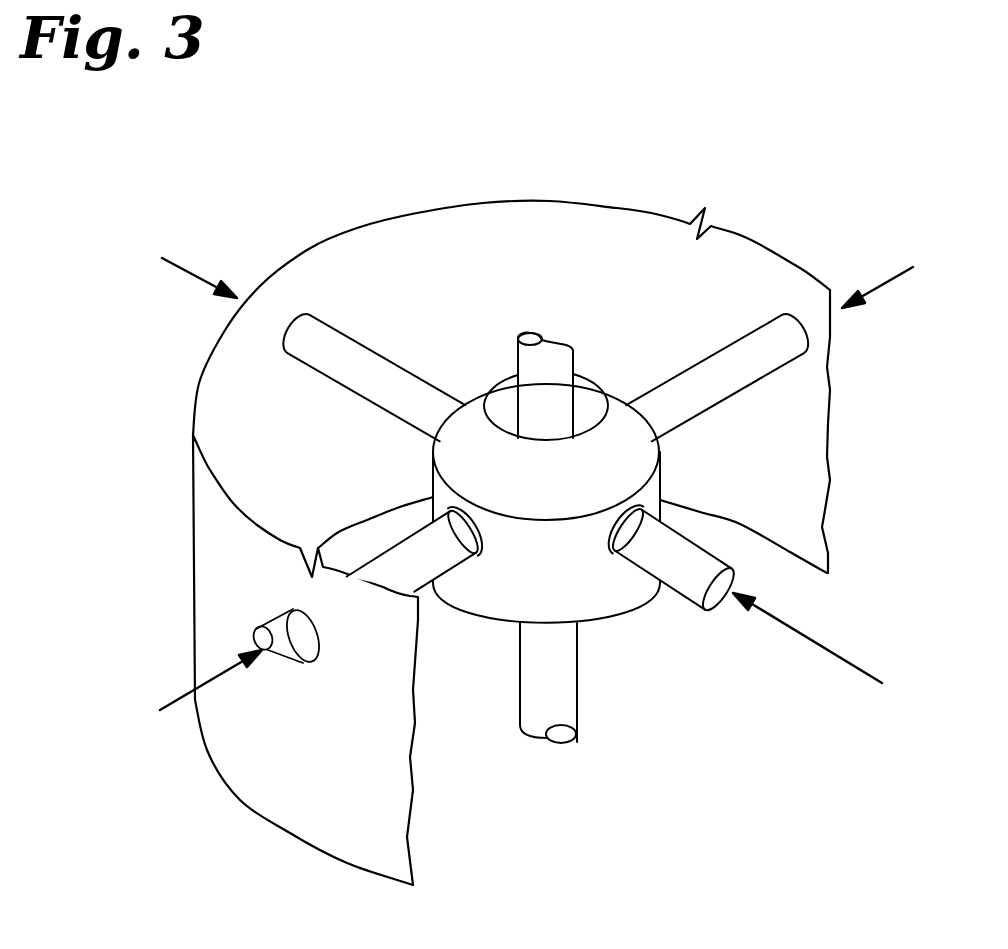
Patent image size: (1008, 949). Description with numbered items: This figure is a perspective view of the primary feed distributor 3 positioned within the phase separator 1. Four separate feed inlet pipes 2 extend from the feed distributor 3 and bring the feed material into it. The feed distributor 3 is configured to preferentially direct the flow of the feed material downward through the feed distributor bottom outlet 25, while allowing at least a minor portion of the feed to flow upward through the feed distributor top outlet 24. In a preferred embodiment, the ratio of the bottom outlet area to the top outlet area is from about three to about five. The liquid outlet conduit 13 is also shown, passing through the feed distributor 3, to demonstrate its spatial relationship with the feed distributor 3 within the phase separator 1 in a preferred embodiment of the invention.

The phase separator 1 is at (357, 233).
The feed inlet pipes 2 is at (378, 352).
The feed distributor 3 is at (603, 617).
The liquid outlet conduit 13 is at (577, 698).
The feed distributor top outlet 24 is at (593, 400).
The feed distributor bottom outlet 25 is at (503, 623).